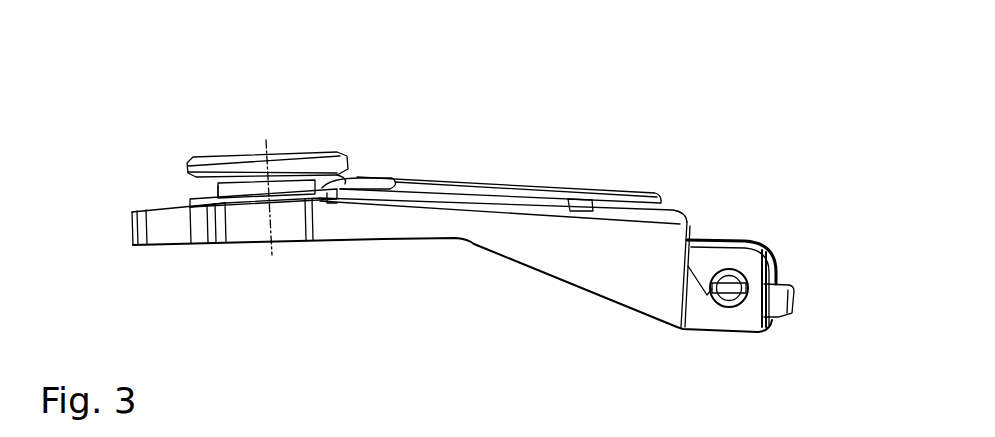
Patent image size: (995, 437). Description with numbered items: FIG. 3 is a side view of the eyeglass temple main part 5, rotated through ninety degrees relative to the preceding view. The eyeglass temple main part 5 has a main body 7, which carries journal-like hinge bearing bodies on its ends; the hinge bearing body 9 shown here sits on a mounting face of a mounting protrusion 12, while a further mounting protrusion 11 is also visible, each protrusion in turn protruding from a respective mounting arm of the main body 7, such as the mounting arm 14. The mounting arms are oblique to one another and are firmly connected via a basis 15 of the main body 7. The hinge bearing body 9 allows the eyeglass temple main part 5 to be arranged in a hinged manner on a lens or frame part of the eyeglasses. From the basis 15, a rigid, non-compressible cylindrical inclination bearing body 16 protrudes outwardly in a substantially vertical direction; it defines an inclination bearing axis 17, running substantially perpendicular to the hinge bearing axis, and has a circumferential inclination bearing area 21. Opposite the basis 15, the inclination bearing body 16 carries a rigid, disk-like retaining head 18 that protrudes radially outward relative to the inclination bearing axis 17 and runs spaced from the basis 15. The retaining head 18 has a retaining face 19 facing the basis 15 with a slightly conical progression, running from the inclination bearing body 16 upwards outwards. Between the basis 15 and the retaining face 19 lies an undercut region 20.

The eyeglass temple main part 5 is at (428, 152).
The main body 7 is at (450, 240).
The hinge bearing body 9 is at (750, 283).
The mounting protrusion 11 is at (771, 262).
The mounting protrusion 12 is at (756, 306).
The mounting arm 14 is at (505, 180).
The basis 15 is at (205, 198).
The inclination bearing body 16 is at (218, 188).
The inclination bearing axis 17 is at (266, 148).
The retaining head 18 is at (298, 153).
The retaining face 19 is at (352, 172).
The undercut region 20 is at (335, 180).
The circumferential inclination bearing area 21 is at (245, 190).